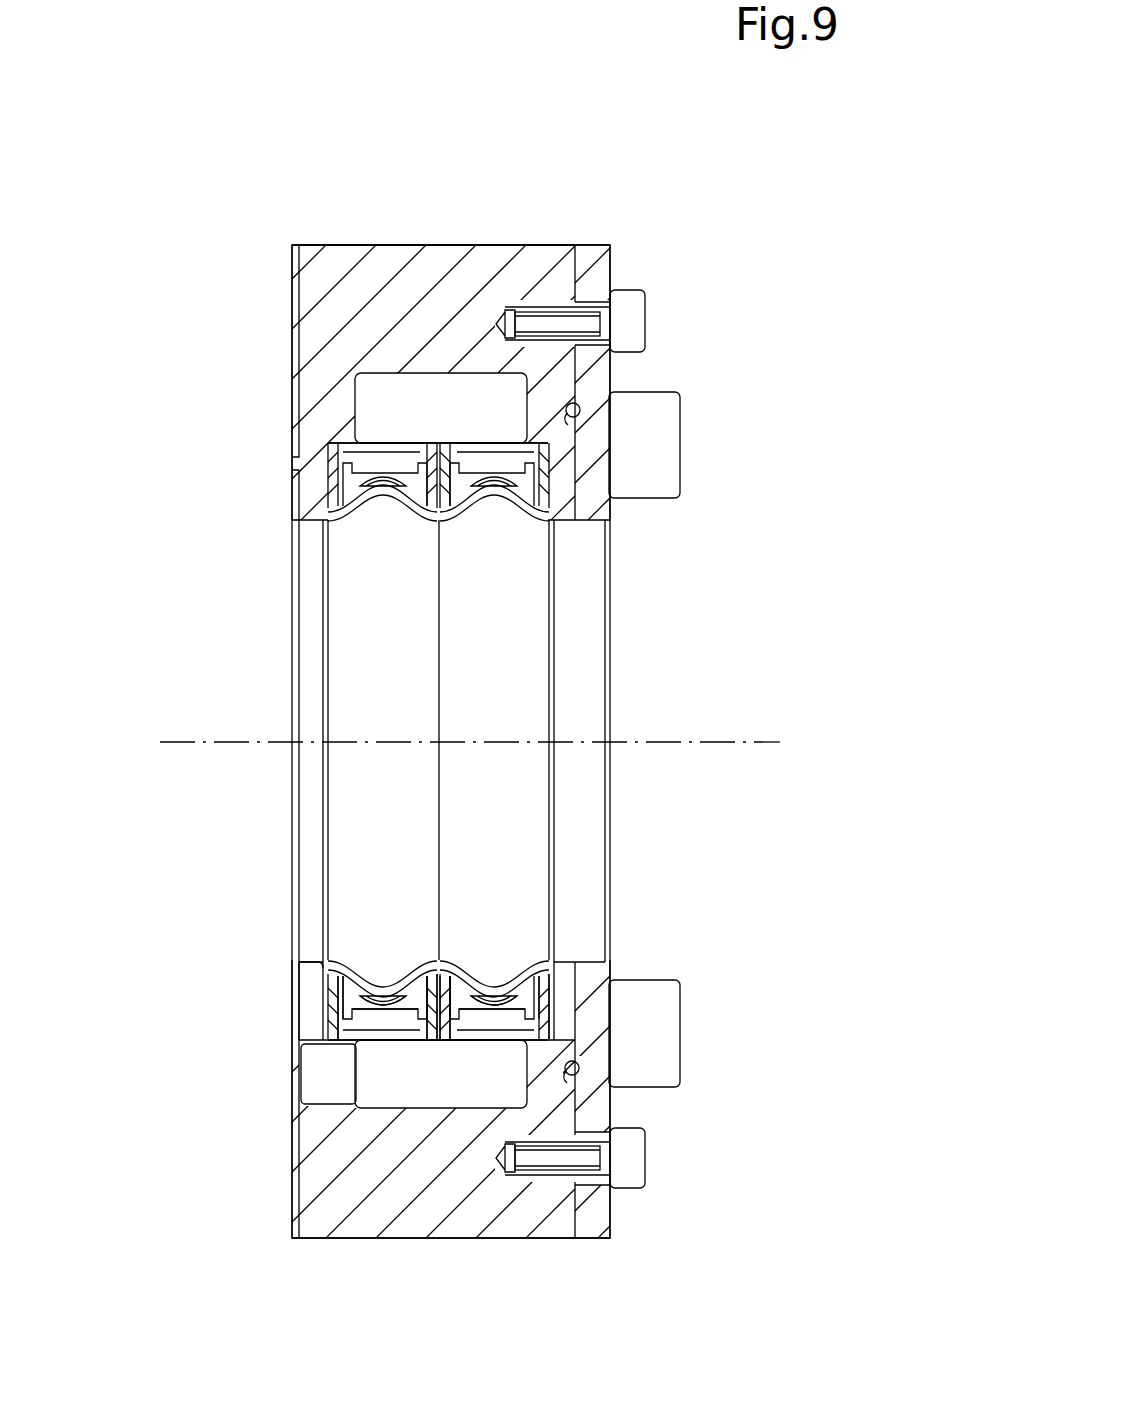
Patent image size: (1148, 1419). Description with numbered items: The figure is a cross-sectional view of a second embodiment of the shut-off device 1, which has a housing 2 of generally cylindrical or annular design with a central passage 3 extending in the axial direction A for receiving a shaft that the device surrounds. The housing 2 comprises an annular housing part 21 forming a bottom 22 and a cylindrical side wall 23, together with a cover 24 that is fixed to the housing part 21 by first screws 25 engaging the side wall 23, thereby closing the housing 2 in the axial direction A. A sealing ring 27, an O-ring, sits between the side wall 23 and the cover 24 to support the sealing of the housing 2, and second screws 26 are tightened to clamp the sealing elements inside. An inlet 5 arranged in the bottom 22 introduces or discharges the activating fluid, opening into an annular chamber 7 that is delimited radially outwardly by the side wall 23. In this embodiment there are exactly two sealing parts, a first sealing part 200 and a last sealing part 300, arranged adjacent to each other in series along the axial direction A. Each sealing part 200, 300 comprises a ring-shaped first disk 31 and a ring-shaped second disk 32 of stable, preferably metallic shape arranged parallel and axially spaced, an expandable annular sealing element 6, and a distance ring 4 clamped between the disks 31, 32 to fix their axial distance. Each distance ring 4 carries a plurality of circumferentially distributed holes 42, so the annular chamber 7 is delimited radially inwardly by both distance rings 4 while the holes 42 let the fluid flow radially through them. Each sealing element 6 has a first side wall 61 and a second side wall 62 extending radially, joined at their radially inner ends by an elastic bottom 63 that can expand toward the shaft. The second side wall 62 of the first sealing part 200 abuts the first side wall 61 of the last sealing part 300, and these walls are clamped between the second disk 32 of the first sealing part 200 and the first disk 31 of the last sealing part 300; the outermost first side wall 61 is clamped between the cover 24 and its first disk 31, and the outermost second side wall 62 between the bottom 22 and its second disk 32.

The shut-off device 1 is at (713, 175).
The housing 2 is at (561, 243).
The housing part 21 is at (330, 243).
The bottom 22 is at (292, 492).
The side wall 23 is at (523, 246).
The cover 24 is at (603, 244).
The first screws 25 is at (627, 318).
The second screws 26 is at (658, 402).
The sealing ring 27 is at (580, 410).
The central passage 3 is at (472, 661).
The first disk 31 is at (428, 1005).
The second disk 32 is at (347, 997).
The last sealing part 300 is at (388, 440).
The first sealing part 200 is at (490, 440).
The annular chamber 7 is at (440, 400).
The distance ring 4 is at (363, 1028).
The holes 42 is at (550, 1000).
The inlet 5 is at (317, 1077).
The sealing element 6 is at (387, 972).
The first side wall 61 is at (435, 1028).
The second side wall 62 is at (332, 1015).
The elastic bottom 63 is at (370, 965).
The axial direction A is at (752, 742).